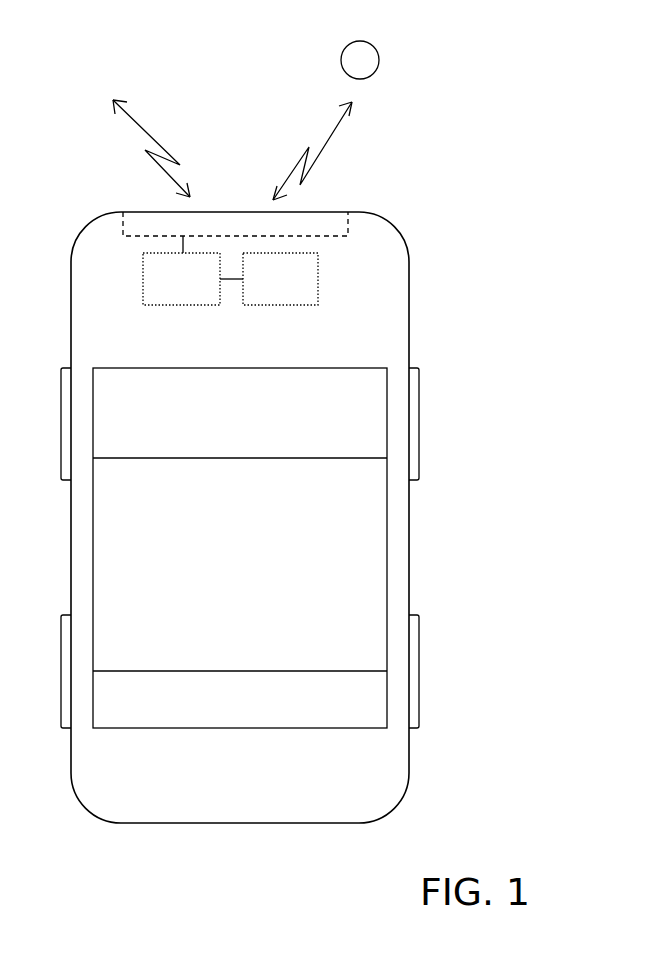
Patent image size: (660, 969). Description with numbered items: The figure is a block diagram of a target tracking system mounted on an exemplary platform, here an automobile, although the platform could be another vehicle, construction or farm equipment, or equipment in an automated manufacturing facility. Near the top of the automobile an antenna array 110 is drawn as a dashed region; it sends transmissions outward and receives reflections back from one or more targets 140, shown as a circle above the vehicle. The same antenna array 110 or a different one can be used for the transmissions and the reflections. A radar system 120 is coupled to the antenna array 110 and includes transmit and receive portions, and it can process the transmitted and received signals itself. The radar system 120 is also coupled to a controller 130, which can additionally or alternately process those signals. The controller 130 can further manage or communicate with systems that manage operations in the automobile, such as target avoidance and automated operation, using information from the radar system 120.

The antenna array 110 is at (123, 236).
The radar system 120 is at (203, 294).
The controller 130 is at (302, 294).
The target 140 is at (380, 58).